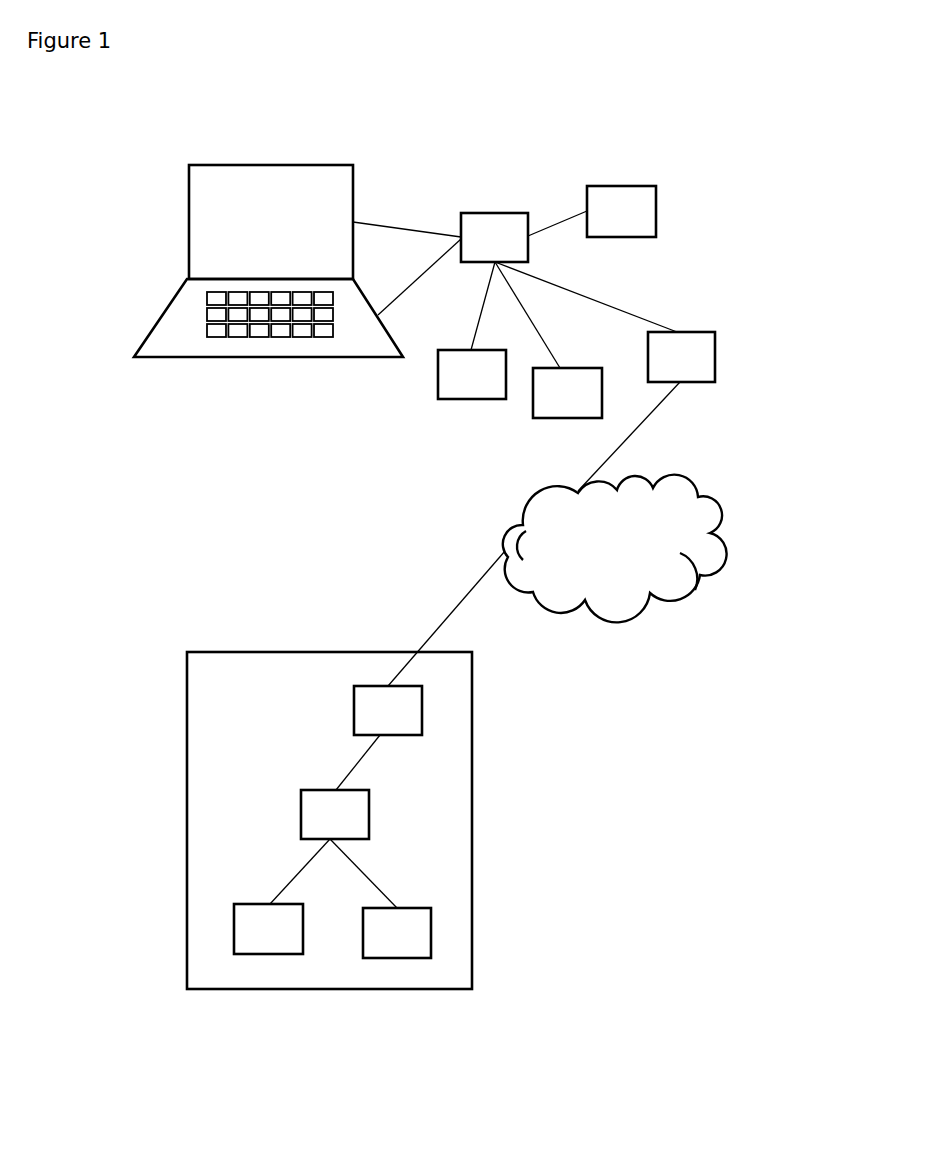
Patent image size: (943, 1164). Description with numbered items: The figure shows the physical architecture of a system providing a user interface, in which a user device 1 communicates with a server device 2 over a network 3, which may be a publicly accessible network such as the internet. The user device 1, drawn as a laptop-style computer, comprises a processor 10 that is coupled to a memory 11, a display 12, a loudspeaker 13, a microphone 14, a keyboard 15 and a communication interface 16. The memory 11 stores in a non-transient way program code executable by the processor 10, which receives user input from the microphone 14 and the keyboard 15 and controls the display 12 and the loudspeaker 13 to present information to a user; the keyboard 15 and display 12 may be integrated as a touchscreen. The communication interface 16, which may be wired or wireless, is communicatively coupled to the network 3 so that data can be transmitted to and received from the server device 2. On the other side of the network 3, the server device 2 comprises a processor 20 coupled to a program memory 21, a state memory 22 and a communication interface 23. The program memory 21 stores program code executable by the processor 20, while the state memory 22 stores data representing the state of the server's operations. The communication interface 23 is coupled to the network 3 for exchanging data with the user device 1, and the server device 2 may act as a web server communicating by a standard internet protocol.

The user device 1 is at (274, 303).
The display 12 is at (305, 185).
The keyboard 15 is at (208, 347).
The processor 10 is at (505, 213).
The memory 11 is at (653, 210).
The loudspeaker 13 is at (533, 418).
The microphone 14 is at (473, 399).
The communication interface 16 is at (715, 343).
The network 3 is at (618, 622).
The server device 2 is at (350, 820).
The communication interface 23 is at (422, 708).
The processor 20 is at (301, 822).
The program memory 21 is at (234, 927).
The state memory 22 is at (431, 938).